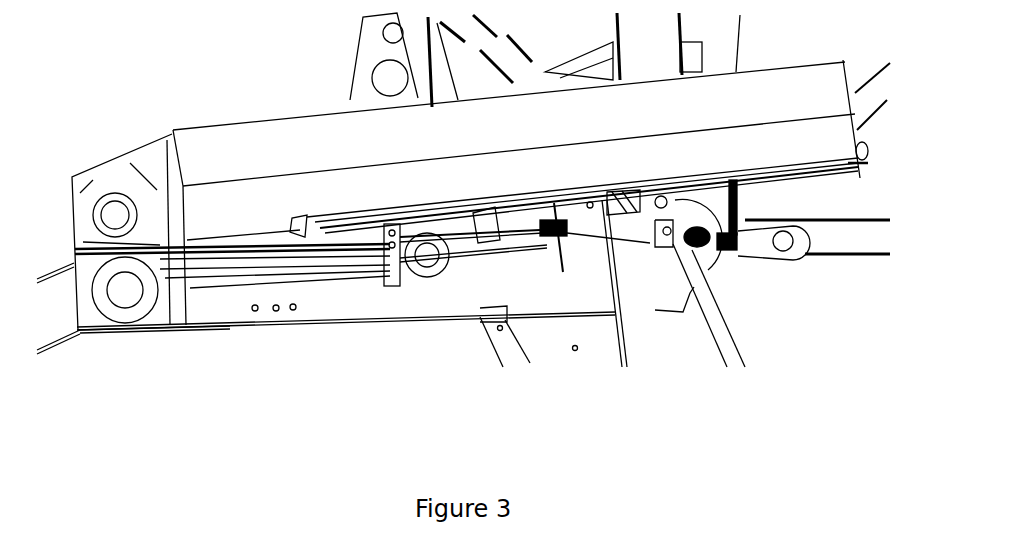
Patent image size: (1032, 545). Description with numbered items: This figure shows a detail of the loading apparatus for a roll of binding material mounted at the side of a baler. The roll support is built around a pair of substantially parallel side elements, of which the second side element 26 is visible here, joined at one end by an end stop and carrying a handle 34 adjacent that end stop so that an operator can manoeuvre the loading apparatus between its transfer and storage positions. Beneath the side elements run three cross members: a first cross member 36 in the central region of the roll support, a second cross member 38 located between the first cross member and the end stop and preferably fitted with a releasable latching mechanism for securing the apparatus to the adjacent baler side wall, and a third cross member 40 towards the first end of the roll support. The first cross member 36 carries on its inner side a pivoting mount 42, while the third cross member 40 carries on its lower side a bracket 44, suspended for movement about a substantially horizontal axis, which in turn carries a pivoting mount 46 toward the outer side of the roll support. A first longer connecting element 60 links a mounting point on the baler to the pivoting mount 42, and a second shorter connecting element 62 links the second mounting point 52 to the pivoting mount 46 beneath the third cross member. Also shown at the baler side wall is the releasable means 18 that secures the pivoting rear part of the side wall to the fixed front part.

The releasable means 18 is at (797, 265).
The second side element 26 is at (723, 173).
The handle 34 is at (846, 184).
The first cross member 36 is at (577, 169).
The second cross member 38 is at (415, 232).
The third cross member 40 is at (696, 204).
The pivoting mount 42 is at (560, 278).
The bracket 44 is at (345, 318).
The pivoting mount 46 is at (409, 308).
The second mounting point 52 is at (320, 135).
The first longer connecting element 60 is at (503, 250).
The second shorter connecting element 62 is at (142, 260).